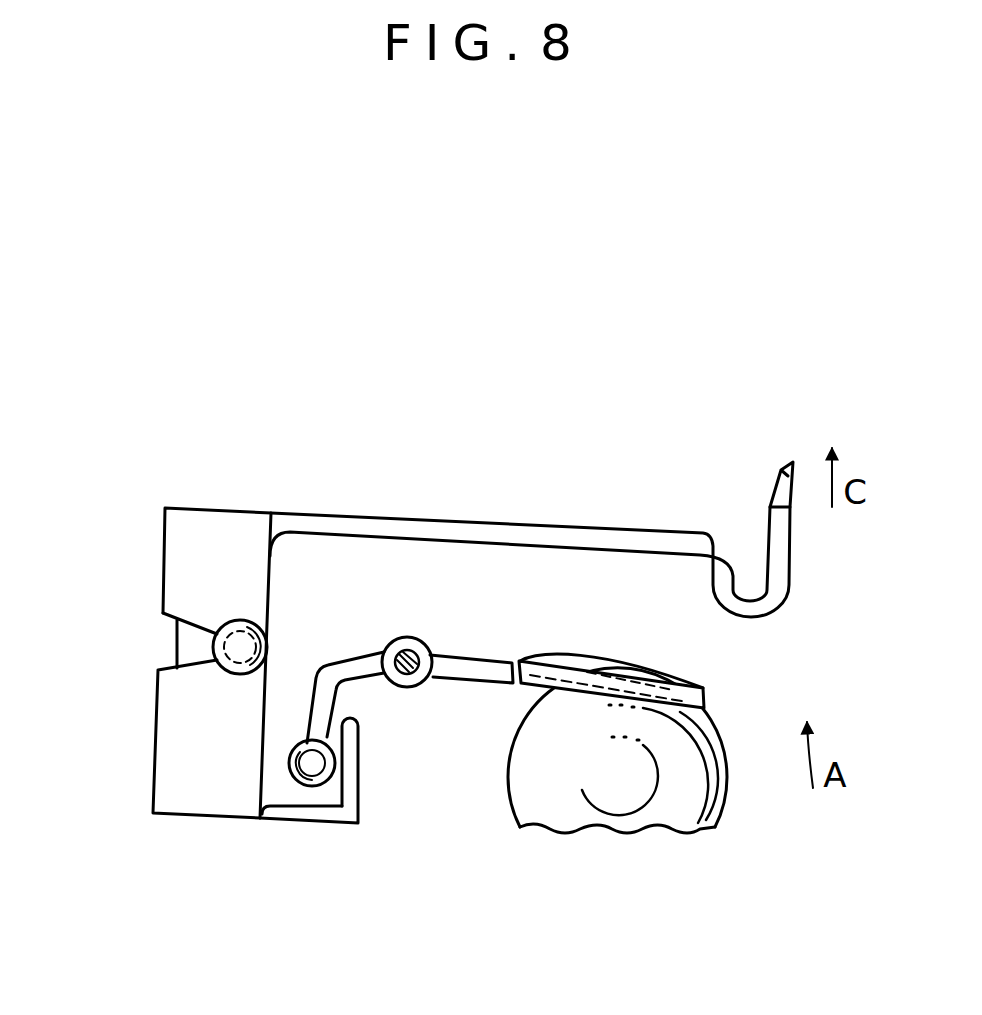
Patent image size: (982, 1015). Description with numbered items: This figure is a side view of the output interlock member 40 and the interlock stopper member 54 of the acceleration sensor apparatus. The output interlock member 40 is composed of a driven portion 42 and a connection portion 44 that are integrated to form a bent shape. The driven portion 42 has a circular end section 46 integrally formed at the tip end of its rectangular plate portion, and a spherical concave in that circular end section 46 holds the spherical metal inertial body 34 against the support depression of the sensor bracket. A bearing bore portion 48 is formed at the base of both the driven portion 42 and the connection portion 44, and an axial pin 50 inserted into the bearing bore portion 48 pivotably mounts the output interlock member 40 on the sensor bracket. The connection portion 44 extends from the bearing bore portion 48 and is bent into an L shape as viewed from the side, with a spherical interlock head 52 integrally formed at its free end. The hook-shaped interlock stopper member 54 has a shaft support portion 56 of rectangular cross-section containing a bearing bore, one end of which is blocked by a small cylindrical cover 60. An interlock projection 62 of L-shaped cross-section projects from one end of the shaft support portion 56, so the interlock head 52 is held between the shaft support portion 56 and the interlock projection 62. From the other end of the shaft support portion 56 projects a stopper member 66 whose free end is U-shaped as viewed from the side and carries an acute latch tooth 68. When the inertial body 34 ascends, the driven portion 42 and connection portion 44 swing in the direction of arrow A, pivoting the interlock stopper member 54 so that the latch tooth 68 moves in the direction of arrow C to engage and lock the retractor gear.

The inertial body 34 is at (680, 800).
The output interlock member 40 is at (441, 630).
The driven portion 42 is at (482, 670).
The connection portion 44 is at (334, 702).
The circular end section 46 is at (630, 663).
The bearing bore portion 48 is at (390, 648).
The axial pin 50 is at (408, 677).
The interlock head 52 is at (300, 782).
The interlock stopper member 54 is at (211, 500).
The shaft support portion 56 is at (170, 765).
The cylindrical cover 60 is at (236, 645).
The interlock projection 62 is at (360, 795).
The stopper member 66 is at (512, 527).
The latch tooth 68 is at (782, 478).